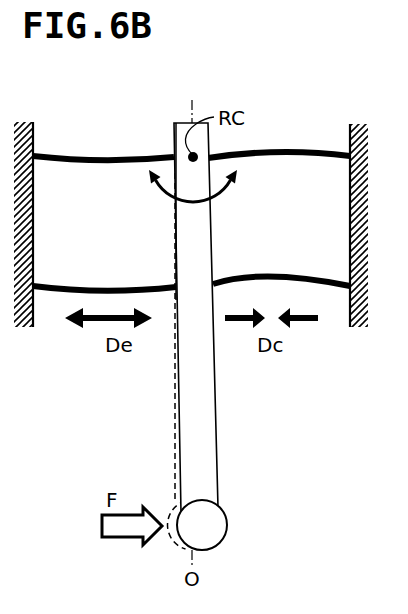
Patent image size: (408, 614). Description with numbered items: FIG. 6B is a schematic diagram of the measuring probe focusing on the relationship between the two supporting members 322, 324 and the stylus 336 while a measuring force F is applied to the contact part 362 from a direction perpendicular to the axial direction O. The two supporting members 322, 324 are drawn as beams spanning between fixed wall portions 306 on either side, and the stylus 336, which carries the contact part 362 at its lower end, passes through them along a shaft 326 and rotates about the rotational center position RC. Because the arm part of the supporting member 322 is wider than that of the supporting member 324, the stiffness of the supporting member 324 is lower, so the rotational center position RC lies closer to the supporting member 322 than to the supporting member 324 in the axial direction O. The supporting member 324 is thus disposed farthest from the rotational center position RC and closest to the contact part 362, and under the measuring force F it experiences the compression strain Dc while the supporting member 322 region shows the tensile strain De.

The fixed support wall (housing) 306 is at (32, 123).
The supporting member 322 is at (272, 147).
The supporting member 324 is at (268, 273).
The rod (lever shaft) 326 is at (195, 228).
The stylus 336 is at (253, 470).
The contact part 362 is at (210, 532).